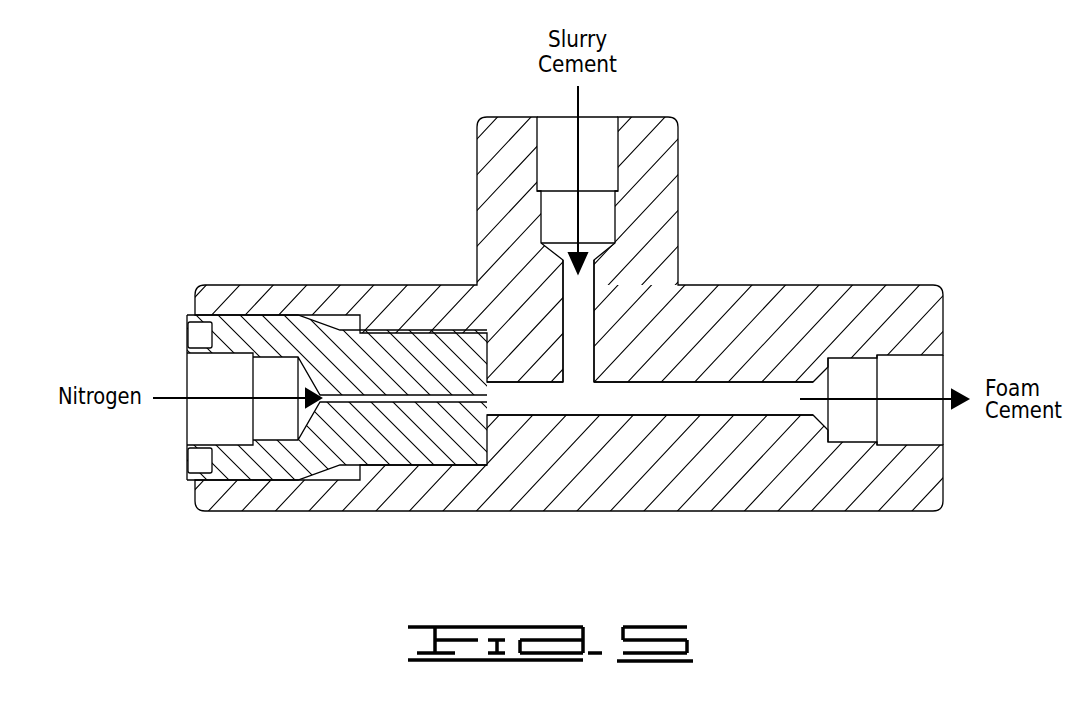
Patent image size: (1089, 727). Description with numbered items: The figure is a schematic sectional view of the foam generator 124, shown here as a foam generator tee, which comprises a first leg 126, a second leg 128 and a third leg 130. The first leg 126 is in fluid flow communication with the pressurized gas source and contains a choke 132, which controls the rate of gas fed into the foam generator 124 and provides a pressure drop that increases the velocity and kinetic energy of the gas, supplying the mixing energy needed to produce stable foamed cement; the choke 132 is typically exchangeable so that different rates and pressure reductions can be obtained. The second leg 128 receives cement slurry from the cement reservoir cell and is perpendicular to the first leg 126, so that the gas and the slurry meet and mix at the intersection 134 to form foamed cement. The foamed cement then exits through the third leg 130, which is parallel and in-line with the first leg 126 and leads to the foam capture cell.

The foam generator 124 is at (879, 124).
The first leg 126 is at (250, 285).
The second leg 128 is at (477, 160).
The third leg 130 is at (870, 512).
The choke 132 is at (327, 452).
The intersection 134 is at (577, 398).